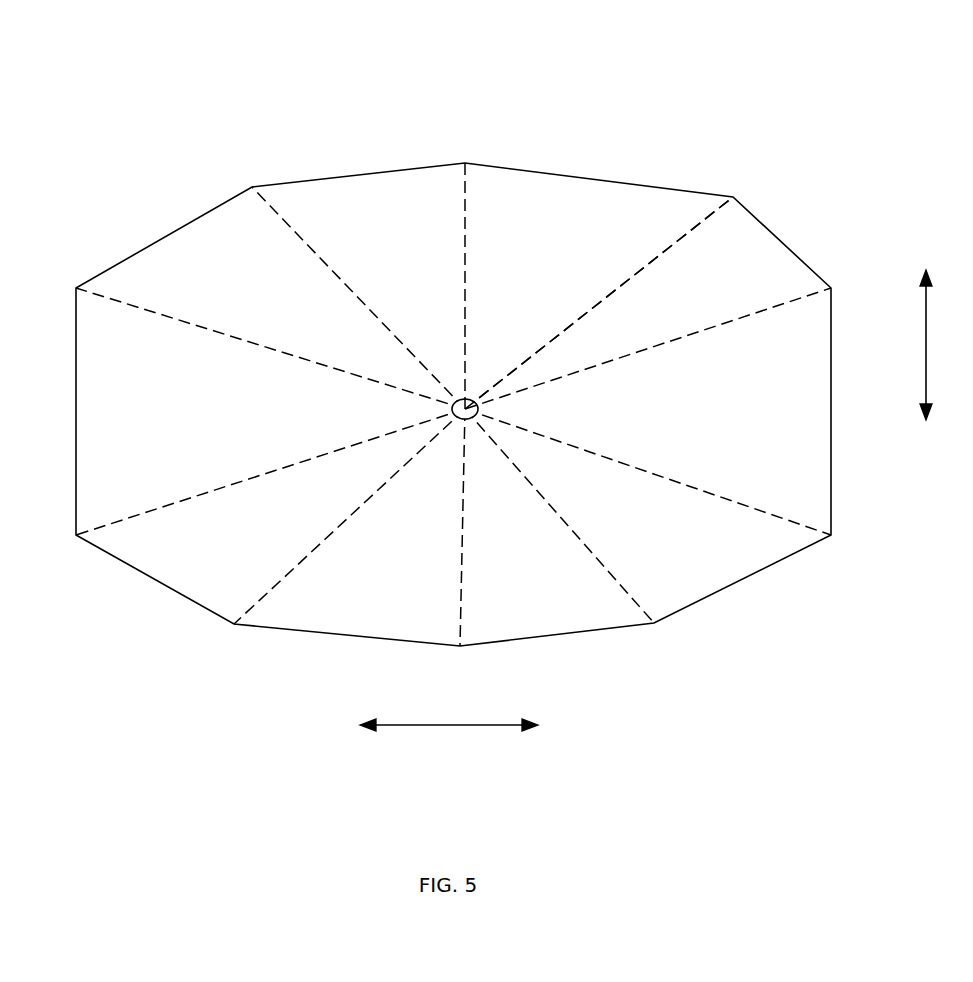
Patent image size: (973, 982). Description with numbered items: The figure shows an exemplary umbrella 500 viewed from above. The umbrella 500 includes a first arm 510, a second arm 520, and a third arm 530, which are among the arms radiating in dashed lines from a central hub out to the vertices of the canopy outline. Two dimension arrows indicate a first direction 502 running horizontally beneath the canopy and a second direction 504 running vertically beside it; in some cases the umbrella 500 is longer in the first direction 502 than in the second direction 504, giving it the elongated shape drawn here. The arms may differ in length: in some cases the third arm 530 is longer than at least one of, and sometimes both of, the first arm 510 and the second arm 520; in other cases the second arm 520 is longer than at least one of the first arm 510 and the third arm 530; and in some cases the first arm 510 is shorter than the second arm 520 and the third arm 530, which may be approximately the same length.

The umbrella 500 is at (376, 80).
The first arm 510 is at (463, 269).
The second arm 520 is at (613, 293).
The third arm 530 is at (779, 307).
The first direction 502 is at (449, 709).
The second direction 504 is at (905, 345).